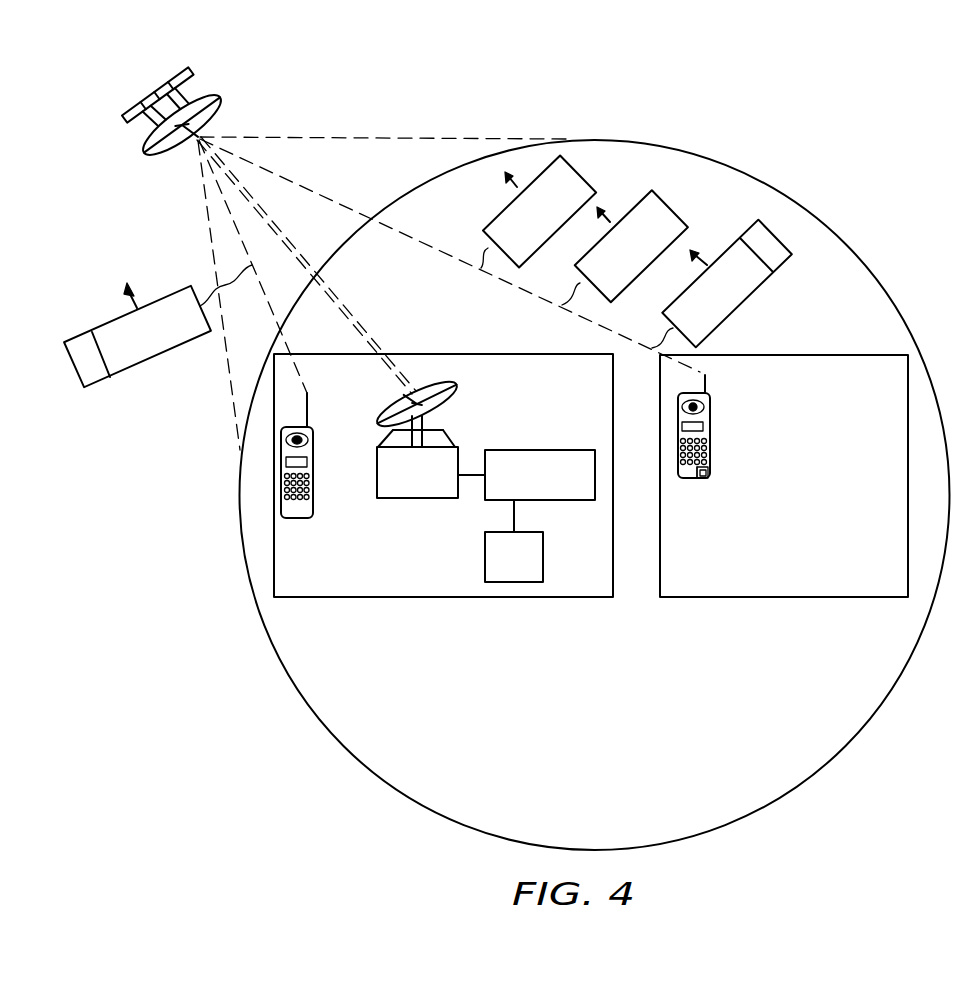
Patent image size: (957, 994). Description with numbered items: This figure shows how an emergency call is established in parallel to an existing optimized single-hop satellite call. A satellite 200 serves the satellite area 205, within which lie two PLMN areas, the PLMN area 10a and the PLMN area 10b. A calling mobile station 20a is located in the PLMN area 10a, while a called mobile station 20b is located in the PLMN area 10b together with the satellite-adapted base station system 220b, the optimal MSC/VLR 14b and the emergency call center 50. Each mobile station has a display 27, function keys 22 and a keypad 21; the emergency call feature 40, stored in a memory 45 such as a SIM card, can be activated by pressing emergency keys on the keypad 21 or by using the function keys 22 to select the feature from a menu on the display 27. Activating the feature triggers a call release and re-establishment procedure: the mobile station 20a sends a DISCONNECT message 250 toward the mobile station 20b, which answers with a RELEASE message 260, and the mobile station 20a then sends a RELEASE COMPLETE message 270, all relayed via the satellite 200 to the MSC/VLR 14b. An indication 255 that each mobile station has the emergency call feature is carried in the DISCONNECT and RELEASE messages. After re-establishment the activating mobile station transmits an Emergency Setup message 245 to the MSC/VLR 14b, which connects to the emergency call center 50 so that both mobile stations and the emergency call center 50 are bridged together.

The satellite 200 is at (208, 92).
The area visible to the satellite 205 is at (595, 495).
The Emergency Setup message 245 is at (578, 182).
The DISCONNECT message 250 is at (733, 303).
The indication 255 is at (80, 360).
The RELEASE message 260 is at (148, 357).
The RELEASE COMPLETE message 270 is at (672, 207).
The PLMN area 10a is at (784, 476).
The PLMN area 10b is at (443, 475).
The calling mobile station 20a is at (728, 441).
The called mobile station 20b is at (297, 518).
The display 27 is at (706, 414).
The function keys 22 is at (712, 430).
The keypad 21 is at (713, 437).
The emergency call feature 40 is at (703, 478).
The memory 45 is at (708, 470).
The satellite-adapted Base Station System 220b is at (412, 498).
The optimal Mobile Switching Center/Visitor Location Register 14b is at (522, 450).
The Emergency Call Center 50 is at (543, 575).